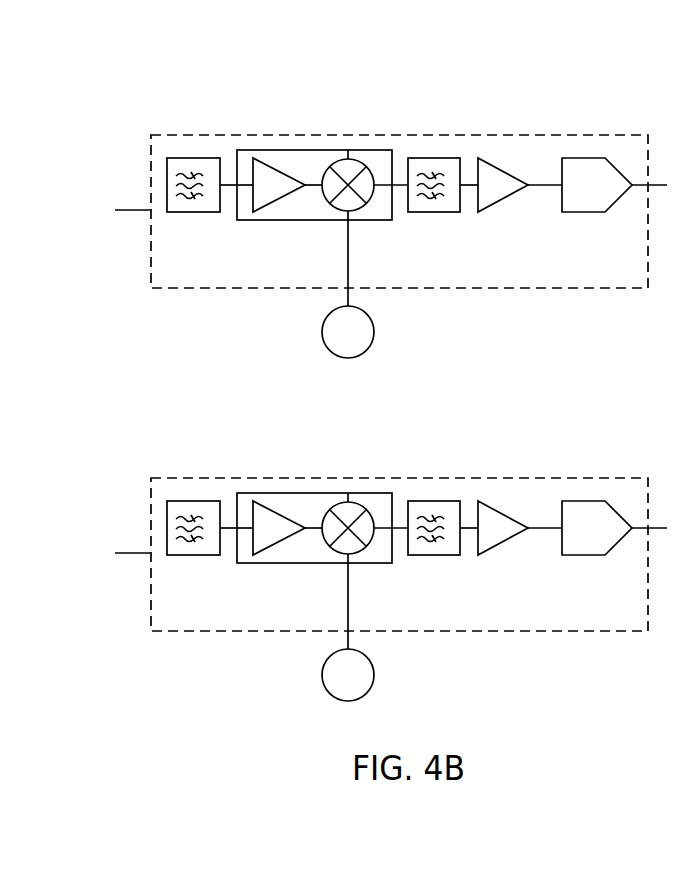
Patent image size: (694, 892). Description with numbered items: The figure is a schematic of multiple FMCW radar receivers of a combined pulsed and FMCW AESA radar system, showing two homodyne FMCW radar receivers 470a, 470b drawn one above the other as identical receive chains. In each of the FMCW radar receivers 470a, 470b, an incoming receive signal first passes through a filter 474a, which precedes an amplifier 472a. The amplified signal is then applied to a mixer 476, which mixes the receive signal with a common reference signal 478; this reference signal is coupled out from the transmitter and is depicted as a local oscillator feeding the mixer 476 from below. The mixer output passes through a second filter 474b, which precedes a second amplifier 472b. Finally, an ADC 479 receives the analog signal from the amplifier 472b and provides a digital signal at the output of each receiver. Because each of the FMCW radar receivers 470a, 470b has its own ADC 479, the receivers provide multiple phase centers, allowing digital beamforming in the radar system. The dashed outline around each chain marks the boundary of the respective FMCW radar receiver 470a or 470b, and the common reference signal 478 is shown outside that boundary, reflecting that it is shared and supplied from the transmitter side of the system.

The FMCW radar receiver 470a is at (186, 290).
The FMCW radar receiver 470b is at (387, 568).
The filter 474a is at (196, 158).
The filter 474b is at (435, 158).
The amplifier 472a is at (262, 205).
The amplifier 472b is at (485, 205).
The mixer 476 is at (348, 158).
The common reference signal 478 is at (323, 332).
The ADC 479 is at (581, 158).